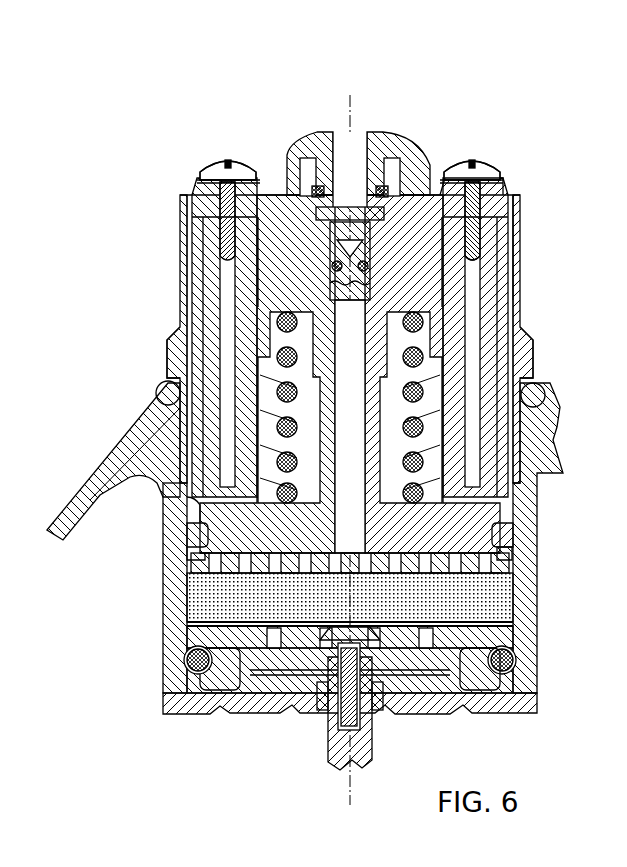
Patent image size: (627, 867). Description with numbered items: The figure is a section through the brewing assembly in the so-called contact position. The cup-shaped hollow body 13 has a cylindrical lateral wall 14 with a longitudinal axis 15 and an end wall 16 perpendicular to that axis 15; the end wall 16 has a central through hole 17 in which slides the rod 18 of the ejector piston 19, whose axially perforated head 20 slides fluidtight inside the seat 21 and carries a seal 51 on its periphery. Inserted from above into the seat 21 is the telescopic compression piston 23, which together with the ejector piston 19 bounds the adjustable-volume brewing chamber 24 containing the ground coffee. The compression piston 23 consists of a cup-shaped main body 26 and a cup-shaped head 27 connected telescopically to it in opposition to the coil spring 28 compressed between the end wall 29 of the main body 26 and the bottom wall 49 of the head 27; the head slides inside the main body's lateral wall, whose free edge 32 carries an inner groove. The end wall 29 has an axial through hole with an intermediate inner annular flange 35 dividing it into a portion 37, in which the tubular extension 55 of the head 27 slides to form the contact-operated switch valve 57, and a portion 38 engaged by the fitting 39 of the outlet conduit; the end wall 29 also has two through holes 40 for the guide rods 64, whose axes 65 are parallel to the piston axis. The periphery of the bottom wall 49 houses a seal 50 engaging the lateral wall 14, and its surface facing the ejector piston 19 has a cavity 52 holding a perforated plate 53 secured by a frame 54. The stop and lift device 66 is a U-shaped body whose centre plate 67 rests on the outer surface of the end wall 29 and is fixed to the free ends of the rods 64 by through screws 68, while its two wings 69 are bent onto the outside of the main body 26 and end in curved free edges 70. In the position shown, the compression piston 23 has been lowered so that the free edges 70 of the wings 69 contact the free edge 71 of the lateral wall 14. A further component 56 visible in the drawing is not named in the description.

The hollow body 13 is at (540, 636).
The cylindrical lateral wall 14 is at (523, 665).
The longitudinal axis 15 is at (352, 112).
The end wall 16 is at (308, 680).
The central through hole 17 is at (340, 684).
The rod 18 is at (362, 750).
The ejector piston 19 is at (516, 683).
The head 20 is at (210, 677).
The seat 21 is at (200, 620).
The compression piston 23 is at (538, 329).
The brewing chamber 24 is at (197, 595).
The main body 26 is at (521, 246).
The head 27 is at (522, 509).
The coil spring 28 is at (557, 431).
The end wall 29 is at (274, 195).
The free edge 32 is at (200, 513).
The inner annular flange 35 is at (290, 195).
The hole portion 37 is at (378, 342).
The hole portion 38 is at (385, 143).
The fitting 39 is at (360, 204).
The through holes 40 is at (250, 292).
The bottom wall 49 is at (193, 533).
The seal 50 is at (205, 555).
The seal 51 is at (187, 660).
The cavity 52 is at (228, 562).
The perforated plate 53 is at (500, 543).
The frame 54 is at (506, 556).
The tubular extension 55 is at (375, 468).
The spring 56 is at (340, 434).
The switch valve 57 is at (482, 256).
The guide rods 64 is at (210, 266).
The axes 65 is at (232, 158).
The stop and lift device 66 is at (535, 296).
The centre plate 67 is at (505, 197).
The through screws 68 is at (222, 168).
The wings 69 is at (180, 300).
The curved free edges 70 is at (176, 386).
The free edge 71 is at (526, 368).